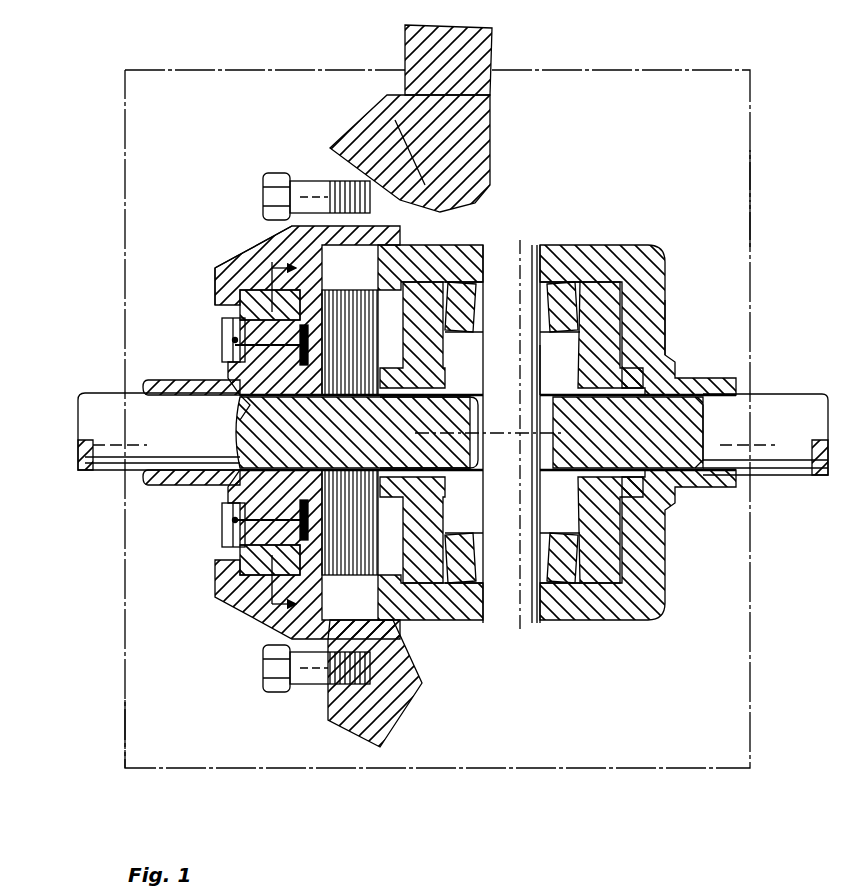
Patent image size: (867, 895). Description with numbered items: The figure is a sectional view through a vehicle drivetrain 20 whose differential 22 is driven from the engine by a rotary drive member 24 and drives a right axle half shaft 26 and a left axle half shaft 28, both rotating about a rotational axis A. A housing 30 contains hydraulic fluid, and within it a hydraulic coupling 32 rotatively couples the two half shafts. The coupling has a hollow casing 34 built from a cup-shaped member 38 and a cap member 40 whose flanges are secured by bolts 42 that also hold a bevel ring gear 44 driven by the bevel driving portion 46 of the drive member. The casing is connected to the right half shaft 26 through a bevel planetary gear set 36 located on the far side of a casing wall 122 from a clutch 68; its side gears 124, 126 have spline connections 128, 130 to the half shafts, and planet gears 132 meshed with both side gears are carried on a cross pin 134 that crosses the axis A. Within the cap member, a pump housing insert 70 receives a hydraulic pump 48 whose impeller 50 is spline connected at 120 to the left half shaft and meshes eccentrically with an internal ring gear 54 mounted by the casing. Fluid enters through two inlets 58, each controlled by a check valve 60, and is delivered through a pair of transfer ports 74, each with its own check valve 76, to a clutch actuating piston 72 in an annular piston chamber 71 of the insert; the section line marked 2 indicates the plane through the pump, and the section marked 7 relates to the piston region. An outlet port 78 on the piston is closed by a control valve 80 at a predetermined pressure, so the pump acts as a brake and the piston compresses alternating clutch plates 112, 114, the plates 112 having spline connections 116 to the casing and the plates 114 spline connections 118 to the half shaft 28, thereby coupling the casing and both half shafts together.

The section line 2 is at (291, 269).
The spring pack 7 is at (370, 300).
The vehicle drivetrain 20 is at (110, 572).
The differential 22 is at (665, 70).
The rotary drive member 24 is at (405, 68).
The right axle half shaft 26 is at (763, 400).
The left axle half shaft 28 is at (105, 455).
The housing 30 is at (750, 155).
The hydraulic coupling 32 is at (155, 668).
The casing 34 is at (612, 245).
The planetary gear set 36 is at (628, 322).
The cup-shaped member 38 is at (478, 248).
The cap member 40 is at (235, 262).
The bolts 42 is at (290, 172).
The ring gear 44 is at (352, 137).
The bevel driving portion 46 is at (420, 178).
The hydraulic pump 48 is at (240, 305).
The impeller 50 is at (191, 432).
The internal ring gear 54 is at (215, 282).
The inlet 58 is at (228, 330).
The check valve 60 is at (228, 345).
The clutch 68 is at (400, 625).
The pump housing insert 70 is at (285, 225).
The annular piston chamber 71 is at (272, 300).
The clutch actuating piston 72 is at (218, 575).
The transfer ports 74 is at (300, 346).
The check valve 76 is at (300, 345).
The outlet port 78 is at (395, 413).
The control valve 80 is at (353, 432).
The clutch plates 112 is at (412, 335).
The clutch plates 114 is at (309, 445).
The spline connections 116 is at (395, 245).
The spline connections 118 is at (412, 445).
The spline connections 120 is at (245, 397).
The casing wall 122 is at (455, 510).
The side gear 124 is at (608, 342).
The side gear 126 is at (452, 290).
The spline connections 128 is at (600, 405).
The spline connections 130 is at (429, 432).
The planet gears 132 is at (558, 270).
The cross pin 134 is at (522, 370).
The rotational axis A is at (555, 418).